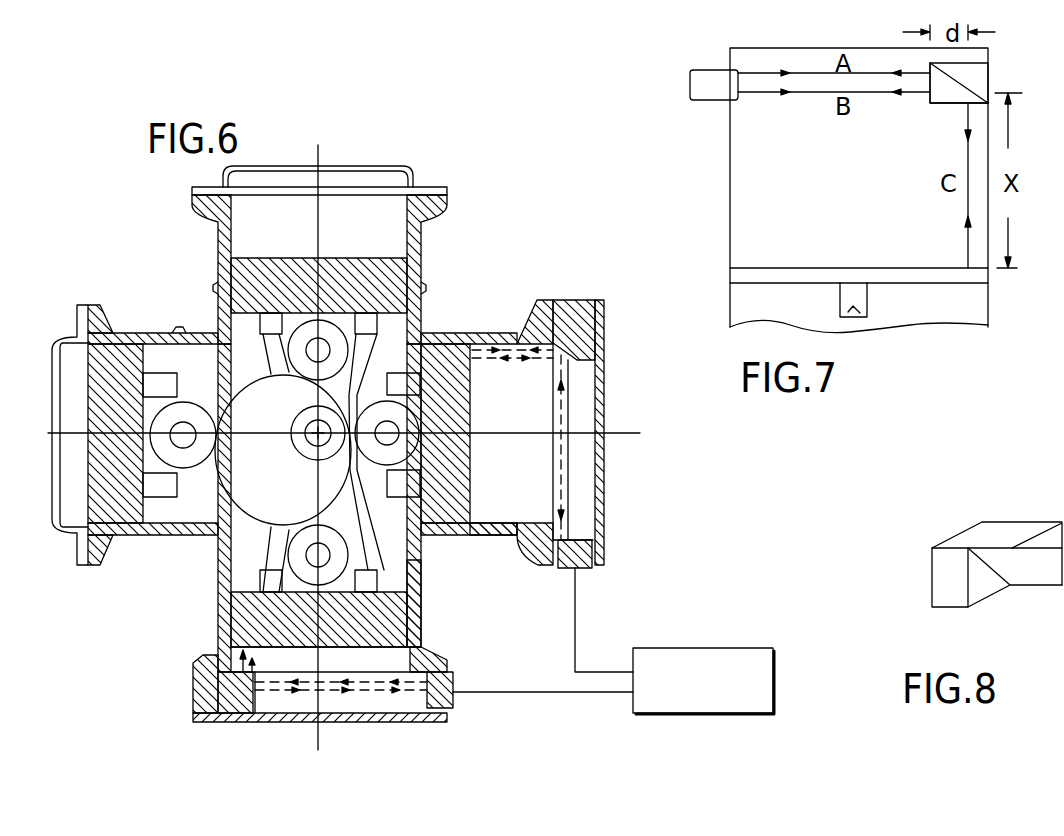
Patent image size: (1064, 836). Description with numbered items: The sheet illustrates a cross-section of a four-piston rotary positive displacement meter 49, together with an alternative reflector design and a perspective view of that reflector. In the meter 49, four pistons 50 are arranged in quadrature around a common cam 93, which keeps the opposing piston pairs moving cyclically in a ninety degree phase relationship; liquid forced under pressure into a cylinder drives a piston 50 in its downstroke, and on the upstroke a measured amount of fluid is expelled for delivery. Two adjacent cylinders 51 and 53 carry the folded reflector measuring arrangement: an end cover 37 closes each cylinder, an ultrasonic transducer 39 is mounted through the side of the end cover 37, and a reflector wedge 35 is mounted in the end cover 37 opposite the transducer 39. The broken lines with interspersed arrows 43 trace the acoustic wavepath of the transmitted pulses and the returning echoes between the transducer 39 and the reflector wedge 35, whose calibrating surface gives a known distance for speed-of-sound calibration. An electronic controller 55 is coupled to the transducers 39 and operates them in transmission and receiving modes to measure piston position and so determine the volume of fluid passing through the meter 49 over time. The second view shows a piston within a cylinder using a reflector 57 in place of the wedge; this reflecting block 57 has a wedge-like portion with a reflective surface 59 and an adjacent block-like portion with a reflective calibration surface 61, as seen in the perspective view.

In FIG. 6, the reflector wedge 35 is at (587, 350).
In FIG. 6, the end cover 37 is at (566, 300).
In FIG. 6, the ultrasonic transducer 39 is at (590, 566).
In FIG. 7, the ultrasonic transducer 39 is at (702, 100).
In FIG. 6, the acoustical wavepath 43 is at (570, 405).
In FIG. 6, the rotary positive displacement meter 49 is at (423, 242).
In FIG. 7, the rotary positive displacement meter 49 is at (731, 279).
In FIG. 6, the piston 50 is at (116, 358).
In FIG. 6, the cylinder 51 is at (510, 527).
In FIG. 6, the cylinder 53 is at (425, 650).
In FIG. 6, the electronic controller 55 is at (773, 680).
In FIG. 7, the reflector 57 is at (977, 83).
In FIG. 8, the reflector 57 is at (1038, 536).
In FIG. 7, the reflective surface 59 is at (947, 63).
In FIG. 8, the reflective surface 59 is at (1010, 585).
In FIG. 7, the reflective calibration surface 61 is at (927, 93).
In FIG. 8, the reflective calibration surface 61 is at (942, 591).
In FIG. 6, the common cam 93 is at (240, 490).